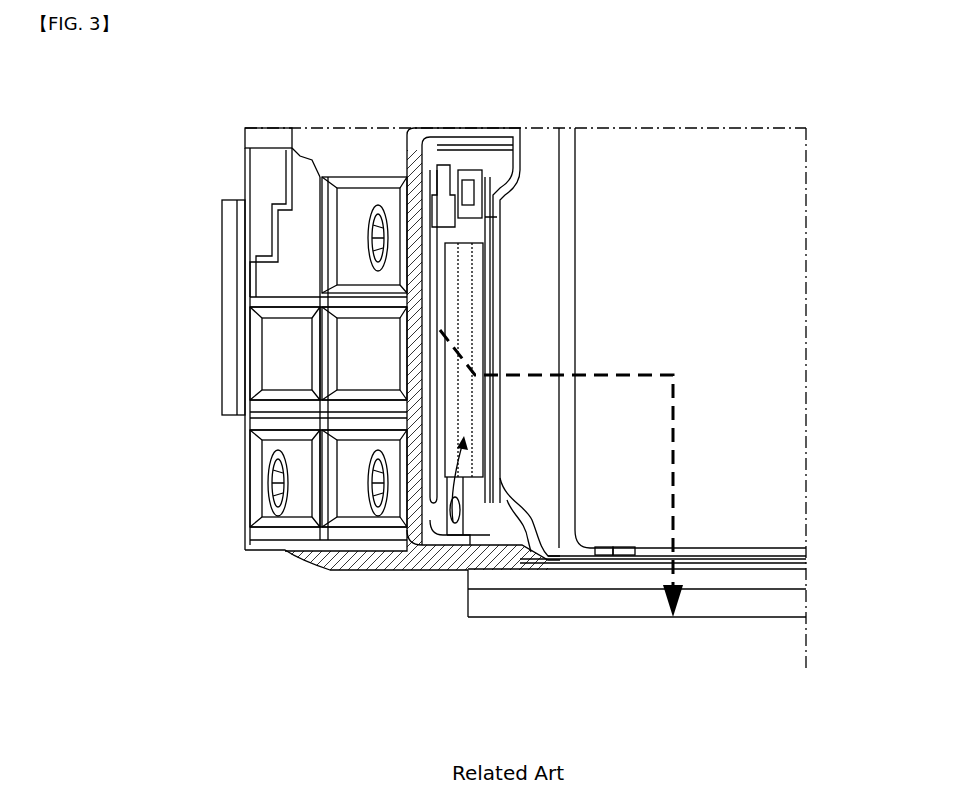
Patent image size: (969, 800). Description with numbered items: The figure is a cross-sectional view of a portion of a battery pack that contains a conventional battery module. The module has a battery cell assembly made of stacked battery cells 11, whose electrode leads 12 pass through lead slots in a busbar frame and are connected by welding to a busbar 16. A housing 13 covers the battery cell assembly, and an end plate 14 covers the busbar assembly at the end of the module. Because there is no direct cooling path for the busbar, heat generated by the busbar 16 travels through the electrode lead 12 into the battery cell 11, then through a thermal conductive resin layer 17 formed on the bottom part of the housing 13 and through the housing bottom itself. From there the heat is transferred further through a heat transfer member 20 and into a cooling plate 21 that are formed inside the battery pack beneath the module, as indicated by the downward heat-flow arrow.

The battery cell 11 is at (663, 150).
The electrode lead 12 is at (458, 540).
The housing 13 is at (792, 565).
The end plate 14 is at (353, 150).
The busbar 16 is at (462, 236).
The thermal conductive resin layer 17 is at (770, 552).
The heat transfer member 20 is at (792, 582).
The cooling plate 21 is at (760, 607).